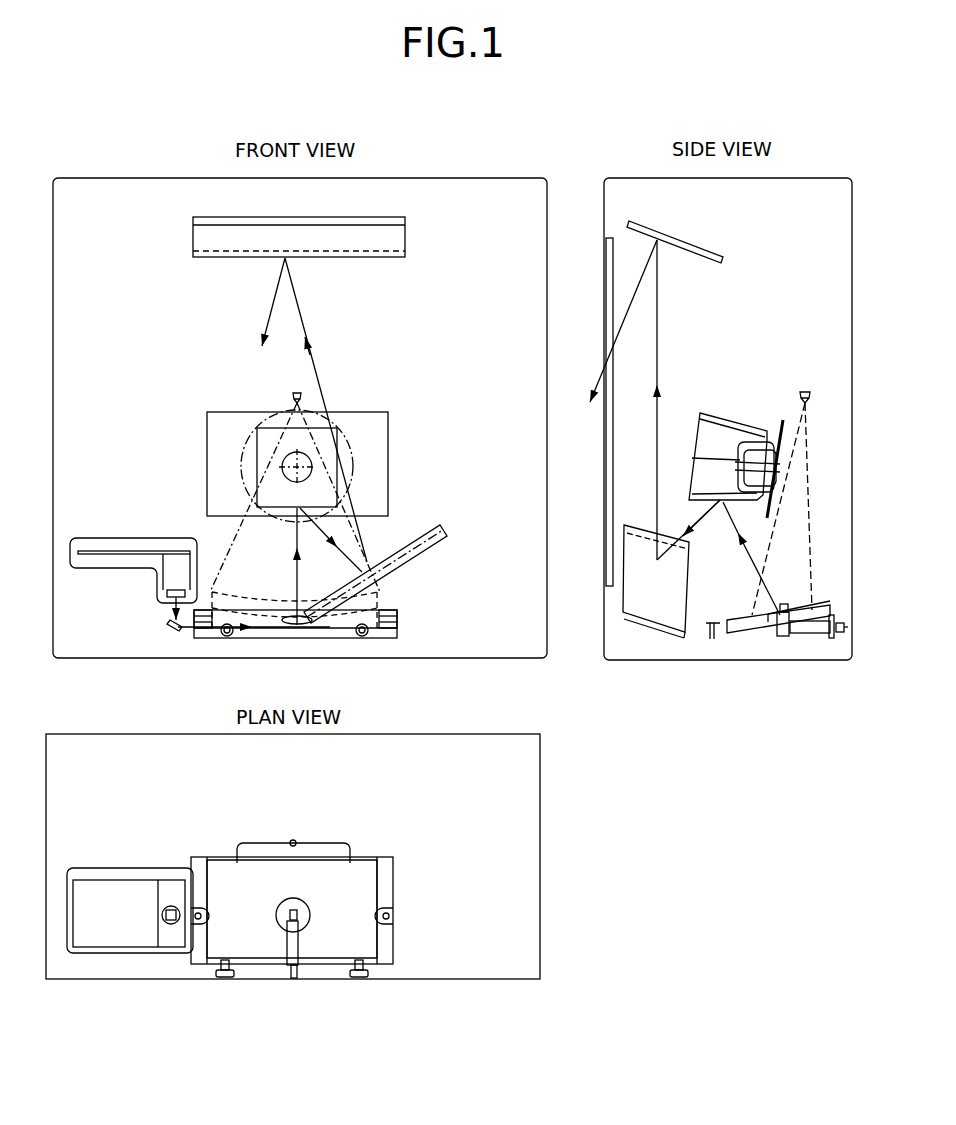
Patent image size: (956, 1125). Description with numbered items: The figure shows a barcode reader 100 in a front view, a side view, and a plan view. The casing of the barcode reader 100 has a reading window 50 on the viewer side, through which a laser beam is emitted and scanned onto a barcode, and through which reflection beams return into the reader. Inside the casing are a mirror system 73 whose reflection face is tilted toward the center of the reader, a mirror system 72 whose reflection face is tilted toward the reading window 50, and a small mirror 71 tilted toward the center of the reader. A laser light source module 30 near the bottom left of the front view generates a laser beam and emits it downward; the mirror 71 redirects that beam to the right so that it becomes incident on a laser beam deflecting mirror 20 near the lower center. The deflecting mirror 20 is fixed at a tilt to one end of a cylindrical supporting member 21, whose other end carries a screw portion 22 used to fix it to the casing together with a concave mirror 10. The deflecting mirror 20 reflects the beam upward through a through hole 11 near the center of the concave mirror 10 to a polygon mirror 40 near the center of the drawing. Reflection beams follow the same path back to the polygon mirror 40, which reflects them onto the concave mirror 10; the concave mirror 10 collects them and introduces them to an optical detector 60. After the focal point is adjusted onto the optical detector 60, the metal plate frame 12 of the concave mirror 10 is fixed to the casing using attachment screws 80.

The barcode reader 100 is at (466, 178).
The concave mirror 10 is at (338, 628).
The through hole 11 is at (773, 634).
The metal plate frame 12 is at (393, 640).
The laser beam deflecting mirror 20 is at (300, 632).
The supporting member 21 is at (820, 634).
The screw portion 22 is at (288, 969).
The laser light source module 30 is at (69, 557).
The polygon mirror 40 is at (338, 452).
The reading window 50 is at (606, 520).
The optical detector 60 is at (291, 396).
The small mirror 71 is at (176, 632).
The mirror system 72 is at (405, 237).
The mirror system 73 is at (428, 560).
The attachment screws 80 is at (226, 980).